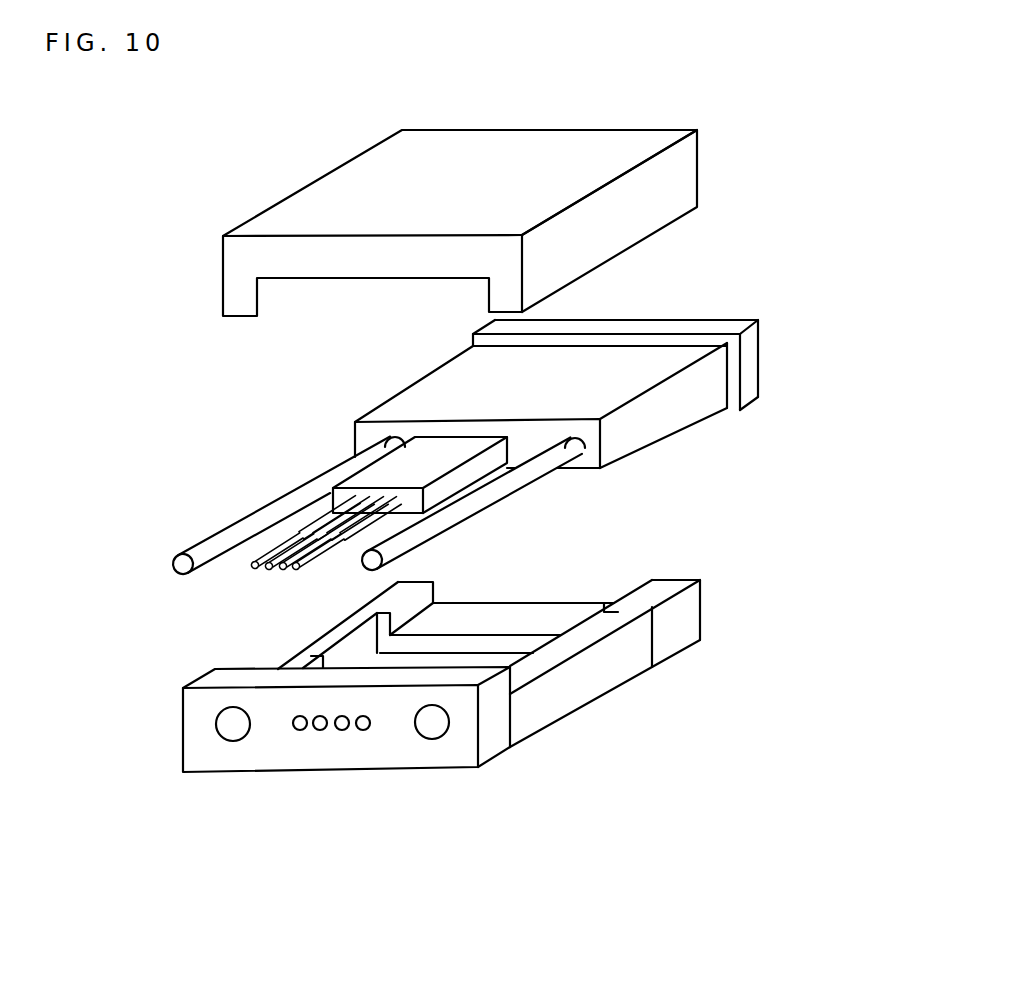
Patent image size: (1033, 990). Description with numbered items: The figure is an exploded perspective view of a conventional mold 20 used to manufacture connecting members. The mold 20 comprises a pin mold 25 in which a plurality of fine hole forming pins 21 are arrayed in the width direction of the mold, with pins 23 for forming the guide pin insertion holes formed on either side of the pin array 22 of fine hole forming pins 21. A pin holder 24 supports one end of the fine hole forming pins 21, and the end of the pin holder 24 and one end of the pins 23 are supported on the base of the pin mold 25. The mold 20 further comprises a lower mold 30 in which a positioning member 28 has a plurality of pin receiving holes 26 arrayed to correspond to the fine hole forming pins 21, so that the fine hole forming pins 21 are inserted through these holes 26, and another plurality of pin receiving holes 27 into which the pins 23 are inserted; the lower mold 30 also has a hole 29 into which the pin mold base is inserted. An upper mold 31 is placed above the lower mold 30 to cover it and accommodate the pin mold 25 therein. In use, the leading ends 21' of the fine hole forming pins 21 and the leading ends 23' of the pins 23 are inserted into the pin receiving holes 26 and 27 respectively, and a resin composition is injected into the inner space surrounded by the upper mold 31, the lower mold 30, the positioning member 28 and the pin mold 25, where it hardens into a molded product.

The mold 20 is at (740, 270).
The fine hole forming pins 21 is at (309, 514).
The leading ends of the fine hole forming pins 21' is at (208, 513).
The pin array 22 is at (290, 573).
The pins for forming the guide pin insertion holes 23 is at (381, 481).
The leading ends of the pins for forming the guide pin insertion holes 23' is at (461, 558).
The pin holder 24 is at (418, 463).
The pin mold 25 is at (682, 395).
The pin receiving holes for the fine hole forming pins 26 is at (300, 730).
The pin receiving holes for the guide pin insertion hole forming pins 27 is at (233, 730).
The positioning member 28 is at (485, 733).
The hole into which the pin mold base is inserted 29 is at (550, 620).
The lower mold 30 is at (608, 673).
The upper mold 31 is at (382, 180).